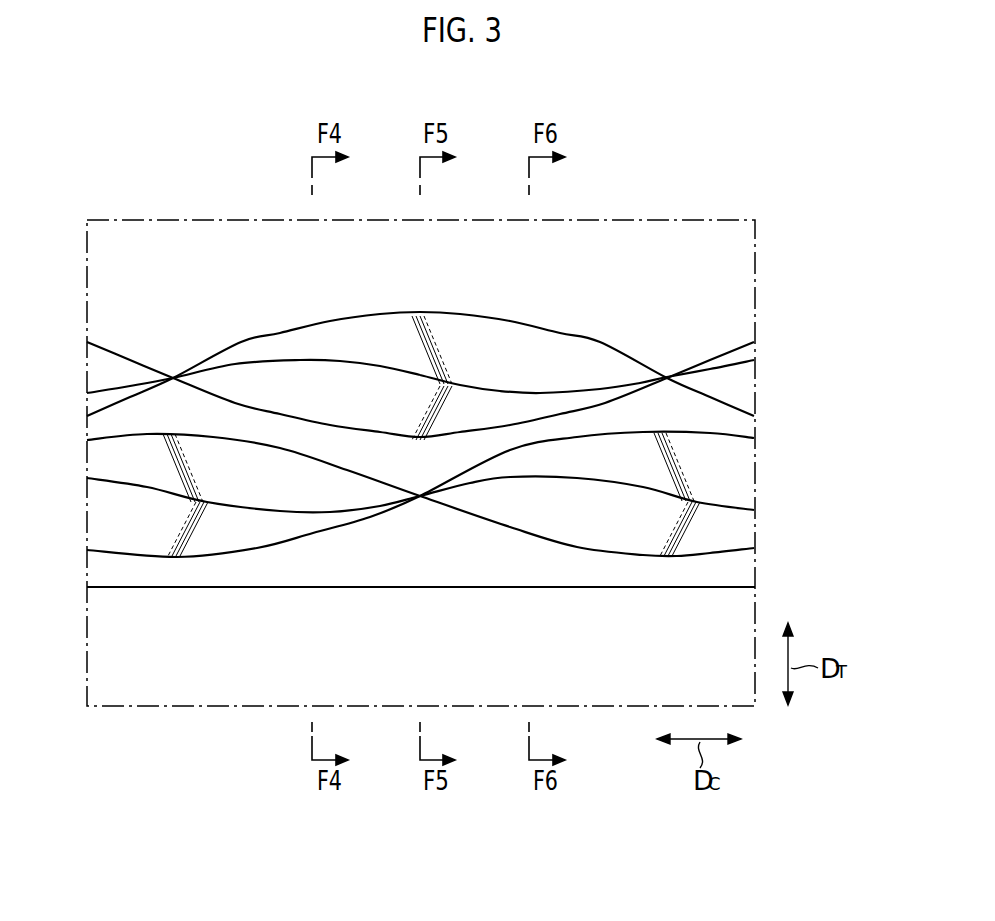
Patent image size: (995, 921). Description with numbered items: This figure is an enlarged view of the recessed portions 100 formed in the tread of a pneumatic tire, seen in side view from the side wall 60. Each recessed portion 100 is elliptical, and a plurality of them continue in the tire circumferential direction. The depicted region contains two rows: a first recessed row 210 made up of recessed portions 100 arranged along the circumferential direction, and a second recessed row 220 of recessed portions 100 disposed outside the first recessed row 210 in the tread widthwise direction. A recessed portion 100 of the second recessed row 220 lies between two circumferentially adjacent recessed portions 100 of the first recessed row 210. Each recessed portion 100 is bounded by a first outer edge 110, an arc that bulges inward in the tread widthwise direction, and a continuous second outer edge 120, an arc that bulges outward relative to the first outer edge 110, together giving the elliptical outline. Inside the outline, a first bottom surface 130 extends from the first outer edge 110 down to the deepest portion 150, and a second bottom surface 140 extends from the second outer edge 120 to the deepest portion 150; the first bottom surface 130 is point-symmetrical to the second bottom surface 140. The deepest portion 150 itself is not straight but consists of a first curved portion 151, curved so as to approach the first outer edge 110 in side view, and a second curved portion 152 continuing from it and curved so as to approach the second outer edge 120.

The side wall 60 is at (700, 413).
The recessed portion 100 is at (468, 443).
The first outer edge 110 is at (525, 326).
The second outer edge 120 is at (313, 430).
The first bottom surface 130 is at (267, 483).
The second bottom surface 140 is at (318, 527).
The deepest portion 150 is at (420, 333).
The first curved portion 151 is at (340, 357).
The second curved portion 152 is at (527, 393).
The first recessed row 210 is at (468, 333).
The second recessed row 220 is at (468, 463).